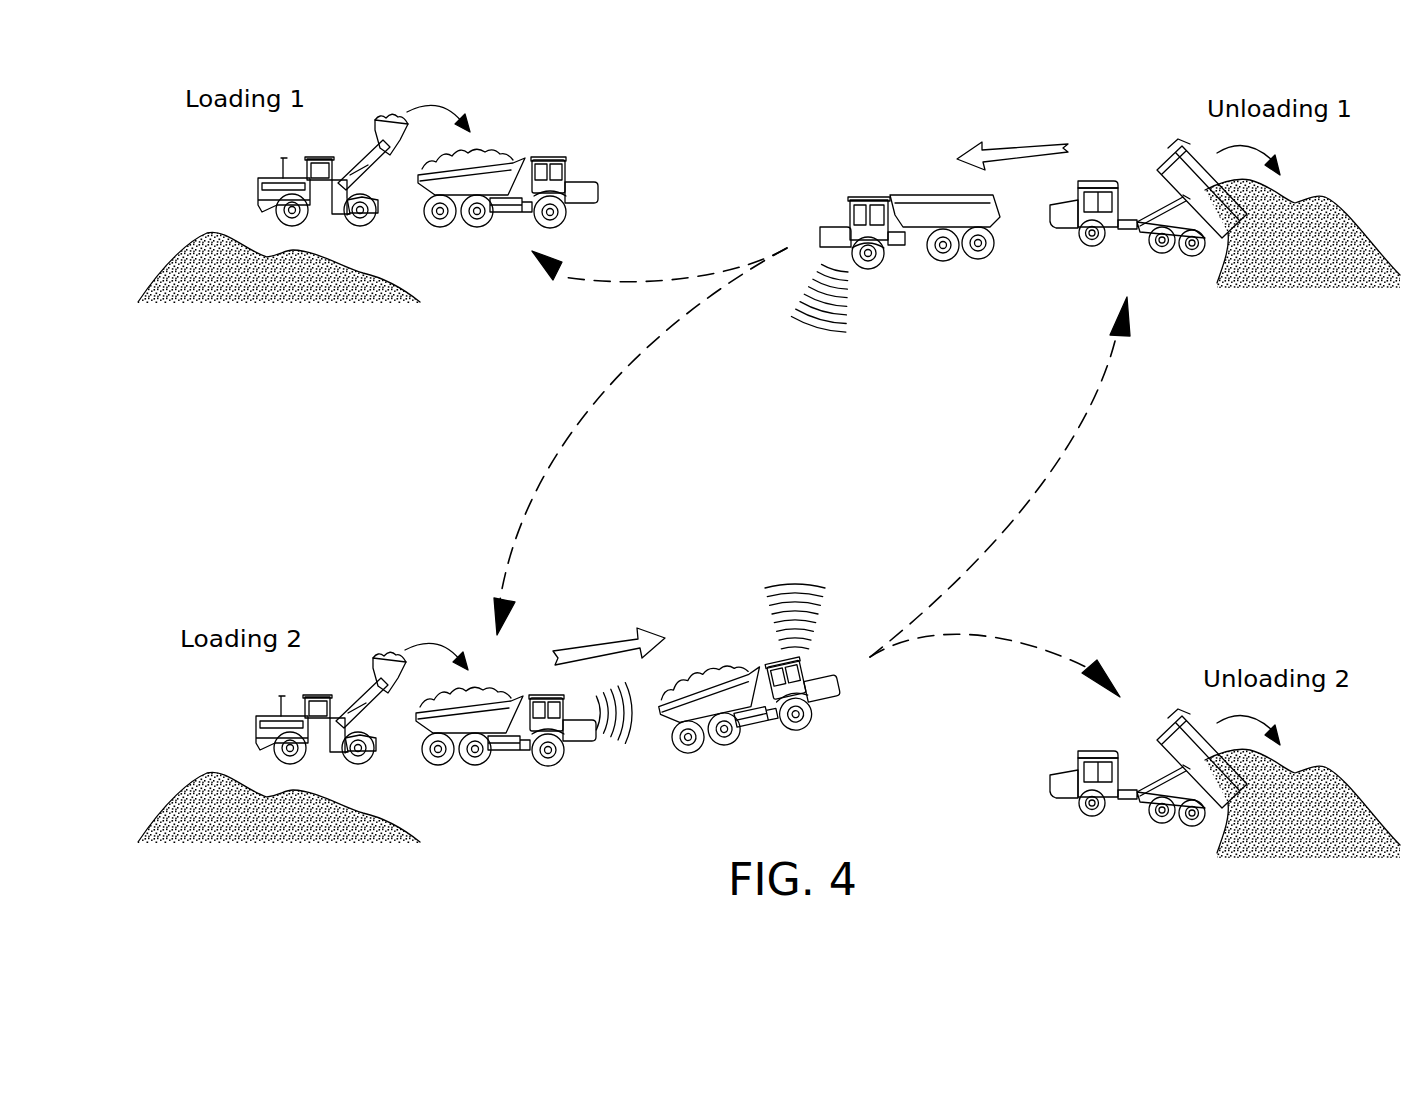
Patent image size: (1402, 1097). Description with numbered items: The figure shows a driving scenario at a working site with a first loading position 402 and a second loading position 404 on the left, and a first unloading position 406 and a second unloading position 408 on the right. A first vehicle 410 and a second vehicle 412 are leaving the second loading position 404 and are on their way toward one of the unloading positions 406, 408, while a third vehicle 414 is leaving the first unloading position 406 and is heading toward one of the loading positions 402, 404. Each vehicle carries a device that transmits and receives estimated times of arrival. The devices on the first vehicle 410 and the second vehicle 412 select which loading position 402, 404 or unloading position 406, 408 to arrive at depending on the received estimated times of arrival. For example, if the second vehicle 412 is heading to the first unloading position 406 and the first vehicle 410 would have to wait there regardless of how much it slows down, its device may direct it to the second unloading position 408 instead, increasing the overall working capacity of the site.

The first loading position 402 is at (267, 297).
The second loading position 404 is at (290, 837).
The first unloading position 406 is at (1310, 270).
The second unloading position 408 is at (1303, 840).
The first vehicle 410 is at (582, 732).
The second vehicle 412 is at (825, 690).
The third vehicle 414 is at (838, 228).